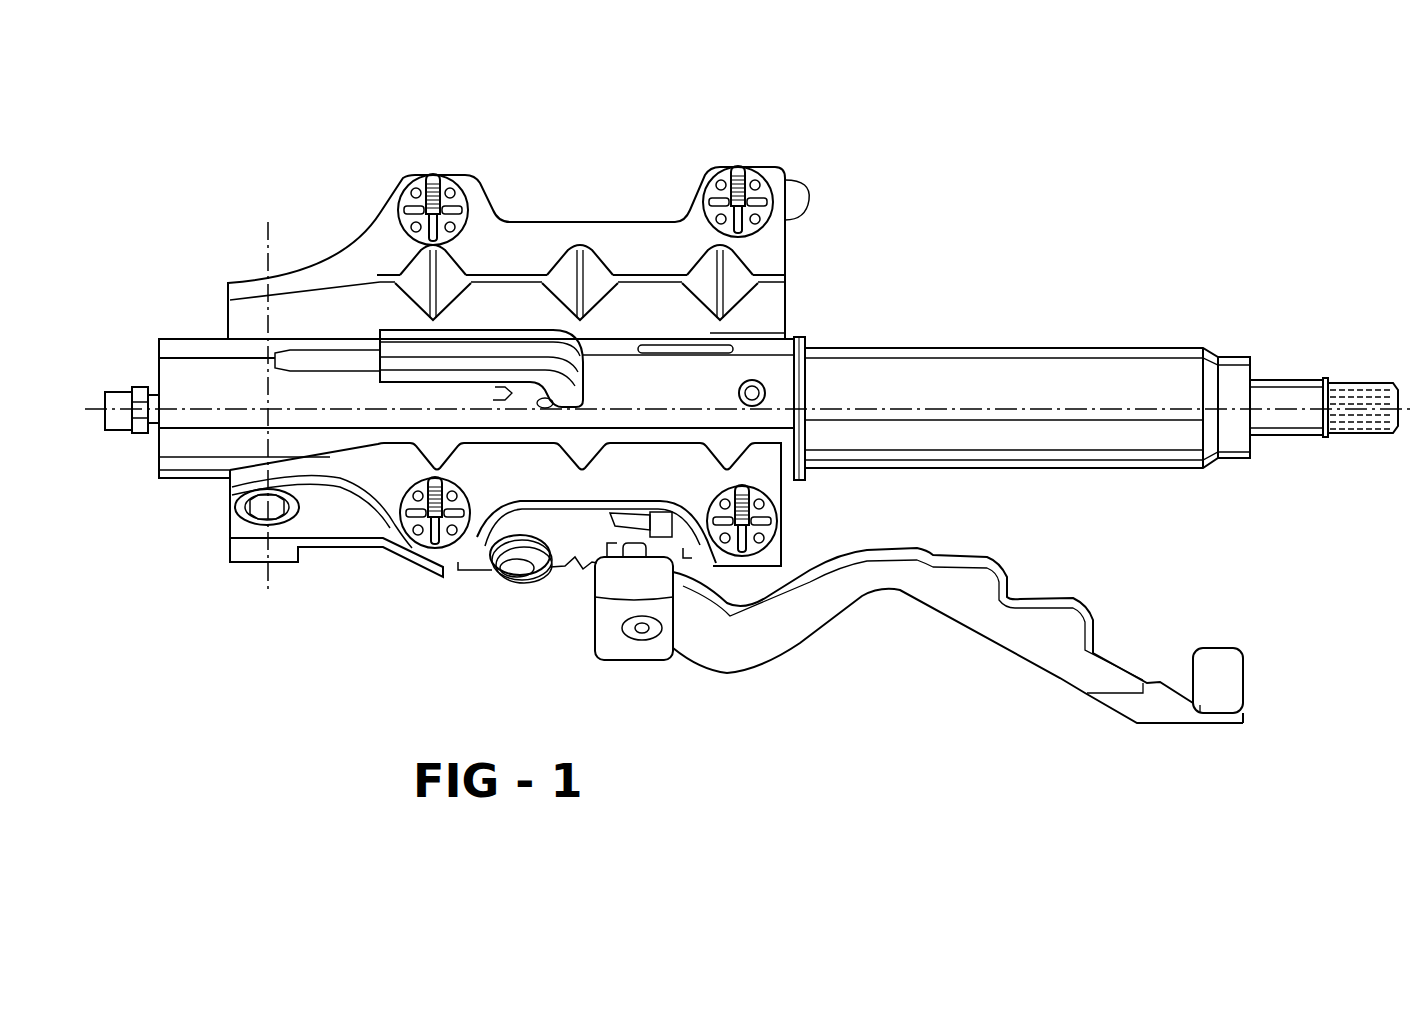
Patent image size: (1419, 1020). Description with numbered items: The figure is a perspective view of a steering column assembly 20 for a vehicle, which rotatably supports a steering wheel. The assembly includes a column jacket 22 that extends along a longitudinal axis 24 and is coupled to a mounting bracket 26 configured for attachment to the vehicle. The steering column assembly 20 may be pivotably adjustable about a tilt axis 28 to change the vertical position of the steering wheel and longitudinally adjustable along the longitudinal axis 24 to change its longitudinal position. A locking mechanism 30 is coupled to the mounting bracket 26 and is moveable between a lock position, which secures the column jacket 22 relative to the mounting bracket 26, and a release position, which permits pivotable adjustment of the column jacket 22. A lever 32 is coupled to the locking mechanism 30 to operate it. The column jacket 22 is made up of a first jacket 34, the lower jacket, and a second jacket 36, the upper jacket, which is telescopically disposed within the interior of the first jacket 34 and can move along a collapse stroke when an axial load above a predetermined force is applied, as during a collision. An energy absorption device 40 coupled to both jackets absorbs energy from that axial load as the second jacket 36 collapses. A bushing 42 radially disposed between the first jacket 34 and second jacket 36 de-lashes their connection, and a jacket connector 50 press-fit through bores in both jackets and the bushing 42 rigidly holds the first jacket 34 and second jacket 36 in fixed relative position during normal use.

The steering column assembly 20 is at (929, 118).
The column jacket 22 is at (858, 348).
The longitudinal axis 24 is at (1112, 407).
The mounting bracket 26 is at (788, 218).
The tilt axis 28 is at (272, 240).
The locking mechanism 30 is at (586, 606).
The lever 32 is at (1002, 630).
The first jacket 34 is at (783, 335).
The second jacket 36 is at (1025, 363).
The energy absorption device 40 is at (587, 374).
The bushing 42 is at (798, 367).
The jacket connector 50 is at (770, 392).